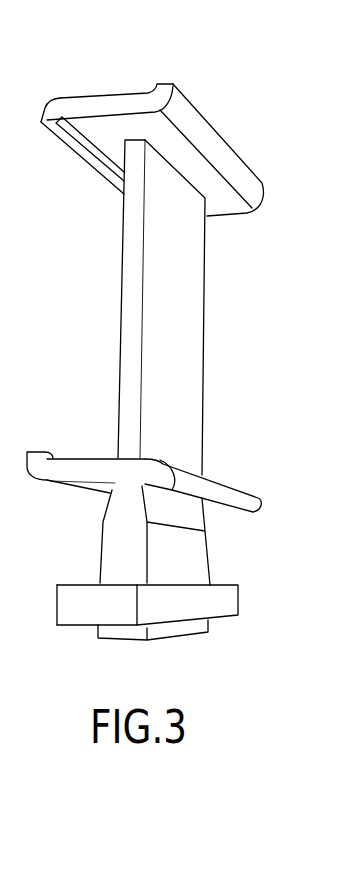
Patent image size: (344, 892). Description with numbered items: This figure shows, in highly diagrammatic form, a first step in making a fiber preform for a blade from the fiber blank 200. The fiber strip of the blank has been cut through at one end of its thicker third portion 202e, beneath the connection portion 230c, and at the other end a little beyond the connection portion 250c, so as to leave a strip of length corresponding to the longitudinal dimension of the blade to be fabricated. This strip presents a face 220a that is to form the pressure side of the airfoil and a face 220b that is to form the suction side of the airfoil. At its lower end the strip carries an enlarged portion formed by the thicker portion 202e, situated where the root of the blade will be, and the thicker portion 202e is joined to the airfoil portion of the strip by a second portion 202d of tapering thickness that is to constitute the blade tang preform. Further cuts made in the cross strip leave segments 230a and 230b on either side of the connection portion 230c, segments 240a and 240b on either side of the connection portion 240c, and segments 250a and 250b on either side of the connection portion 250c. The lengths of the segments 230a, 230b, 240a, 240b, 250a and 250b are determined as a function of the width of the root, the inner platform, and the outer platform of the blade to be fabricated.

The fiber blank 200 is at (156, 367).
The segment 250a is at (36, 102).
The segment 250b is at (249, 163).
The connection portion 250c is at (112, 105).
The face 220a is at (178, 364).
The face 220b is at (122, 272).
The segment 240a is at (34, 445).
The segment 240b is at (254, 483).
The connection portion 240c is at (92, 470).
The second portion 202d is at (152, 498).
The segment 230a is at (49, 601).
The segment 230b is at (222, 607).
The connection portion 230c is at (83, 612).
The third portion 202e is at (135, 637).